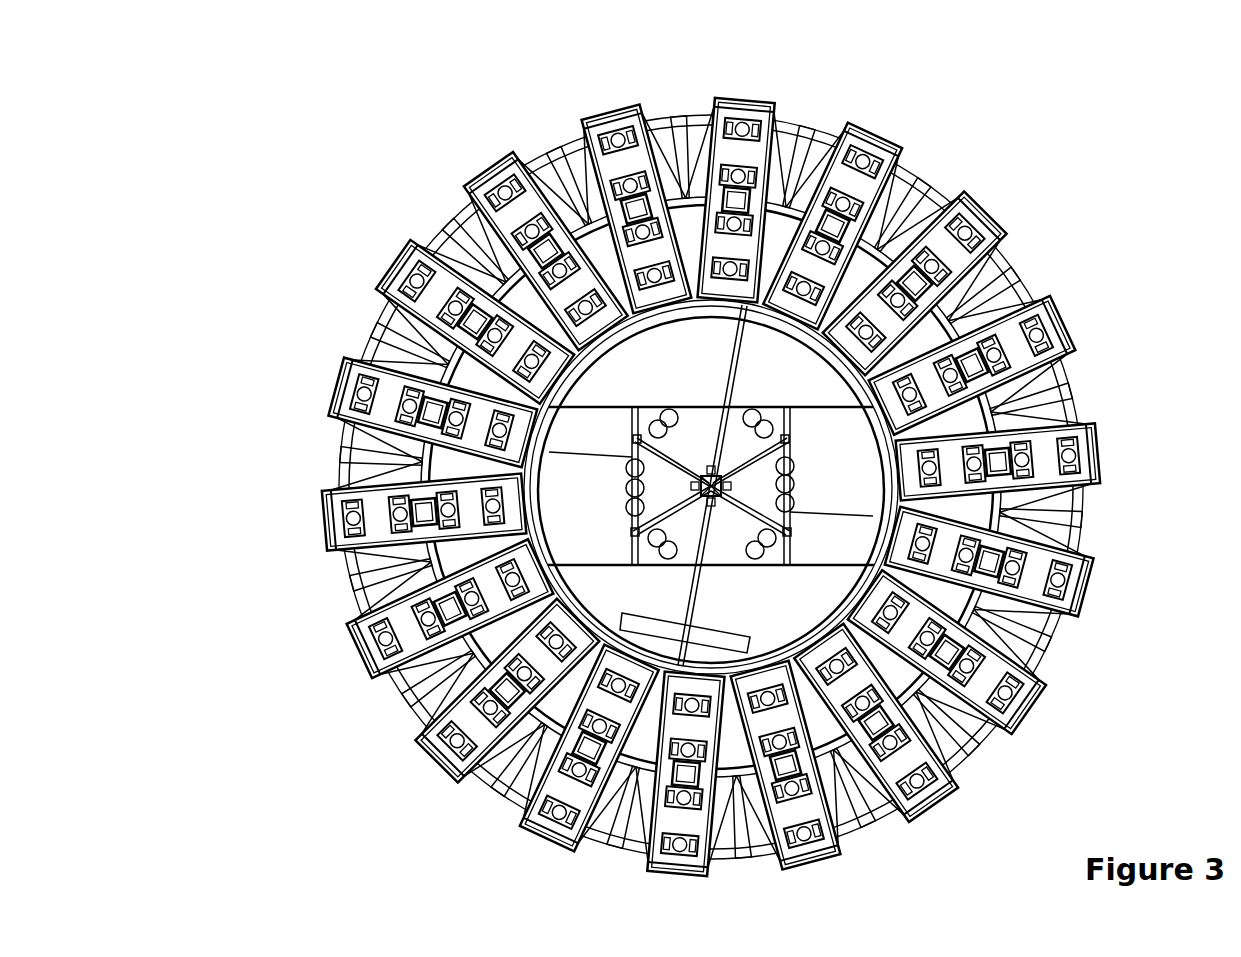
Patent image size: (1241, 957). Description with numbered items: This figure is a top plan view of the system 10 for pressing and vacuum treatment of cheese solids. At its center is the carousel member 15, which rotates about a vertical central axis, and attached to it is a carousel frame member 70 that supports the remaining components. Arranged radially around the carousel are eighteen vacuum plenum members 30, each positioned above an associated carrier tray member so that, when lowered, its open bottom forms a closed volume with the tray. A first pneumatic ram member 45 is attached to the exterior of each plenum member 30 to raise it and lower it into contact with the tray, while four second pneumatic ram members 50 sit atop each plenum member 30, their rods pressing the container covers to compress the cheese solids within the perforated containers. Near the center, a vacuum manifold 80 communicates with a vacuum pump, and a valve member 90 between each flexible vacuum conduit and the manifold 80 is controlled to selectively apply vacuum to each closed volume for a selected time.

The system for pressing and vacuum treatment of cheese solids 10 is at (270, 770).
The carousel member 15 is at (832, 346).
The vacuum plenum member 30 is at (612, 155).
The first pneumatic ram member 45 is at (438, 400).
The second pneumatic ram member 50 is at (440, 398).
The carousel frame member 70 is at (470, 236).
The vacuum manifold 80 is at (708, 410).
The valve member 90 is at (626, 478).